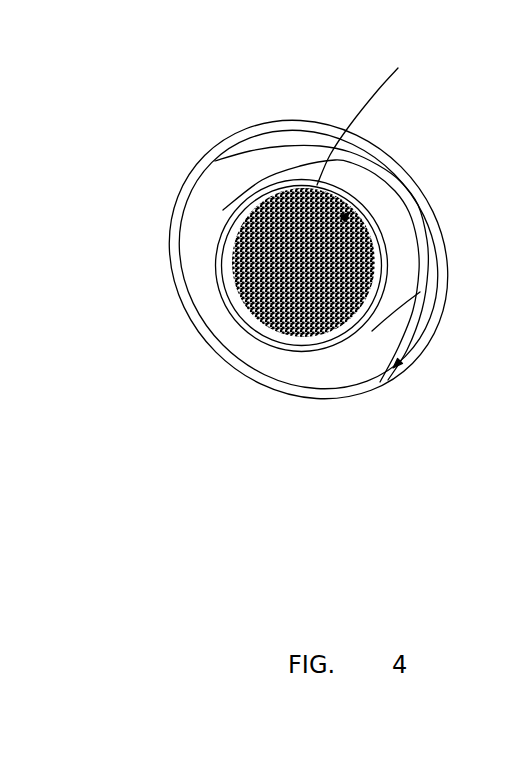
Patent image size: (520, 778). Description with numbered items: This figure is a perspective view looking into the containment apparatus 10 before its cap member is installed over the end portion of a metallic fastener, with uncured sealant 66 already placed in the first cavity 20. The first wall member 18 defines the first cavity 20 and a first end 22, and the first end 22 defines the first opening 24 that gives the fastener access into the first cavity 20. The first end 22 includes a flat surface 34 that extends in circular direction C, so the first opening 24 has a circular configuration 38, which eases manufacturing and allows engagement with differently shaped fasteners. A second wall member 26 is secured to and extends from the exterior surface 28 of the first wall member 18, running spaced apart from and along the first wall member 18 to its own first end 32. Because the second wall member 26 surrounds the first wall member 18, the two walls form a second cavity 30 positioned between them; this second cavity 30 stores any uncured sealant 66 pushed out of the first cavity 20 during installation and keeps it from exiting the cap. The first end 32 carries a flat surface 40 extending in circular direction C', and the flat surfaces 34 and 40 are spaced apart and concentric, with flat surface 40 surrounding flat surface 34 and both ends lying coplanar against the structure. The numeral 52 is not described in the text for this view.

The containment apparatus 10 is at (414, 137).
The first wall member 18 is at (363, 193).
The first cavity 20 is at (331, 348).
The first end 22 is at (230, 258).
The first opening 24 is at (250, 302).
The second wall member 26 is at (332, 138).
The exterior surface 28 is at (389, 143).
The second cavity 30 is at (190, 224).
The first end 32 is at (247, 137).
The flat surface 34 is at (285, 168).
The circular configuration 38 is at (241, 329).
The flat surface 40 is at (244, 380).
The groove 52 is at (436, 284).
The uncured sealant 66 is at (274, 250).
The circular direction C is at (369, 118).
The circular direction C' is at (424, 341).